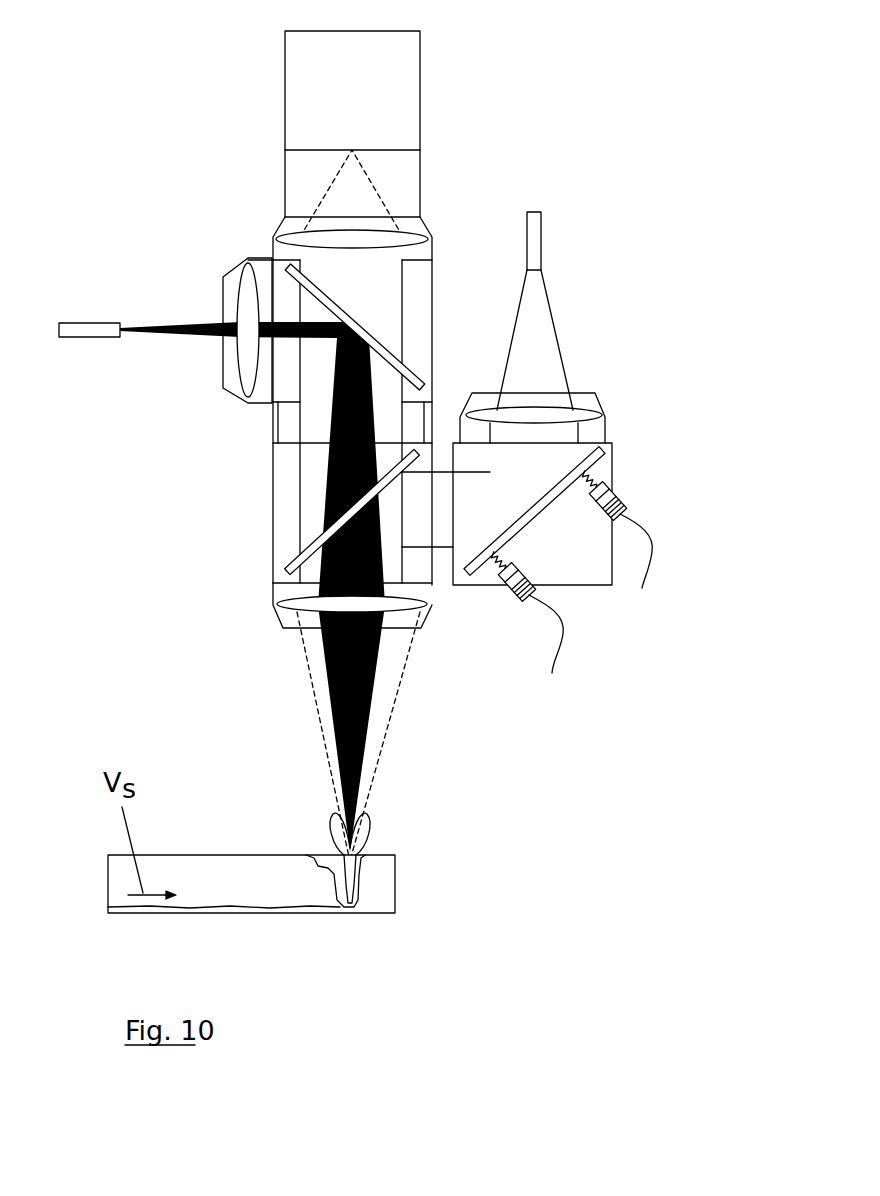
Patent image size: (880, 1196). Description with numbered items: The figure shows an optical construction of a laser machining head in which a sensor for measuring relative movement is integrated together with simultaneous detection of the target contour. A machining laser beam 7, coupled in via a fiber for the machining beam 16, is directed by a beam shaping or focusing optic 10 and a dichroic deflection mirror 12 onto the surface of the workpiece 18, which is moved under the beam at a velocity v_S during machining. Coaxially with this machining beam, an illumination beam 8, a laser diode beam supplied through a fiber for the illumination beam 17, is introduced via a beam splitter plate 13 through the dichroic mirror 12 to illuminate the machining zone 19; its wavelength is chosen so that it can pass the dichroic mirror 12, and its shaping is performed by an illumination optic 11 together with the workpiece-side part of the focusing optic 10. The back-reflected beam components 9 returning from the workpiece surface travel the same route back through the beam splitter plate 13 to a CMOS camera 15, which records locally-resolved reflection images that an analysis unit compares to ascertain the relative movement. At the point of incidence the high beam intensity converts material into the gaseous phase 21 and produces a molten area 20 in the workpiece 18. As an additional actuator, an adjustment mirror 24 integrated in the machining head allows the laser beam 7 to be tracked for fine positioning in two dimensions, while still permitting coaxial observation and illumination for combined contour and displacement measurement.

The machining laser beam 7 is at (533, 342).
The illumination beam 8 is at (330, 410).
The back-reflected beam components 9 is at (357, 192).
The focusing optic 10 is at (388, 603).
The illumination optic 11 is at (247, 292).
The dichroic mirror 12 is at (300, 548).
The beam splitter plate 13 is at (373, 337).
The CMOS camera 15 is at (390, 101).
The fiber for machining beam 16 is at (537, 232).
The fiber for illumination beam 17 is at (87, 327).
The workpiece 18 is at (387, 888).
The machining zone 19 is at (327, 840).
The molten area 20 is at (337, 872).
The gaseous phase 21 is at (360, 830).
The adjustment mirror 24 is at (527, 515).